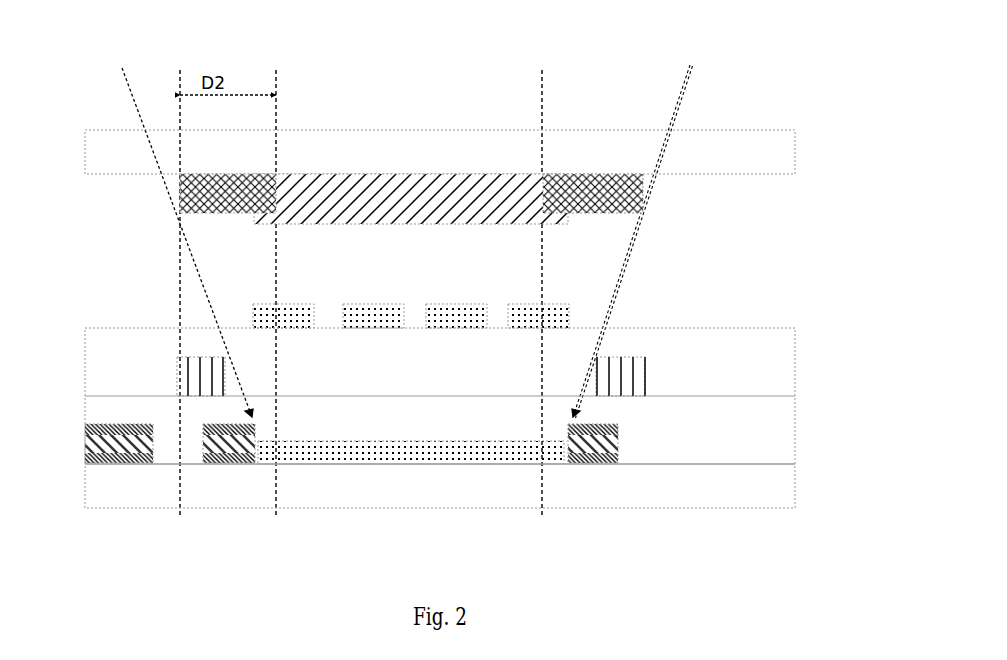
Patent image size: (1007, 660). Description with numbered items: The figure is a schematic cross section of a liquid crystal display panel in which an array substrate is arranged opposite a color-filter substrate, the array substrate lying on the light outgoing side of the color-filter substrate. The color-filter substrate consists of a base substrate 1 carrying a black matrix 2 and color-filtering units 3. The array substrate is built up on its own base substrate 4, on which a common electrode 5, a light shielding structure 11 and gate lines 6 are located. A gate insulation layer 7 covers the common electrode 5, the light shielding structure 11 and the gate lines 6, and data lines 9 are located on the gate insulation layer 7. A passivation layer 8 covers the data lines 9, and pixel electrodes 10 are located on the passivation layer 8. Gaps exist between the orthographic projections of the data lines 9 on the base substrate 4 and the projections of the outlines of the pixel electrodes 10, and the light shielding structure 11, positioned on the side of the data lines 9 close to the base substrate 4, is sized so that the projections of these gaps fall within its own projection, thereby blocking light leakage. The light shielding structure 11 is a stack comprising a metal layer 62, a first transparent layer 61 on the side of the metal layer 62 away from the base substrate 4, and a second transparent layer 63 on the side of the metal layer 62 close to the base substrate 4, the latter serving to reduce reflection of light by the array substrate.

The base substrate 1 is at (795, 150).
The black matrix 2 is at (643, 196).
The color-filtering units 3 is at (568, 222).
The base substrate 4 is at (795, 498).
The common electrode 5 is at (439, 464).
The gate lines 6 is at (85, 452).
The gate insulation layer 7 is at (795, 445).
The passivation layer 8 is at (795, 380).
The data lines 9 is at (630, 372).
The pixel electrodes 10 is at (565, 318).
The light shielding structure 11 is at (223, 501).
The first transparent layer 61 is at (228, 463).
The metal layer 62 is at (207, 463).
The second transparent layer 63 is at (230, 463).